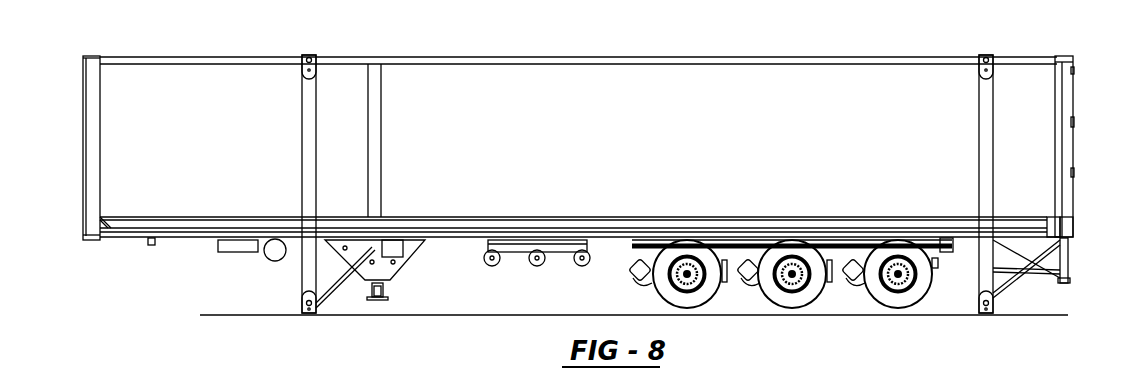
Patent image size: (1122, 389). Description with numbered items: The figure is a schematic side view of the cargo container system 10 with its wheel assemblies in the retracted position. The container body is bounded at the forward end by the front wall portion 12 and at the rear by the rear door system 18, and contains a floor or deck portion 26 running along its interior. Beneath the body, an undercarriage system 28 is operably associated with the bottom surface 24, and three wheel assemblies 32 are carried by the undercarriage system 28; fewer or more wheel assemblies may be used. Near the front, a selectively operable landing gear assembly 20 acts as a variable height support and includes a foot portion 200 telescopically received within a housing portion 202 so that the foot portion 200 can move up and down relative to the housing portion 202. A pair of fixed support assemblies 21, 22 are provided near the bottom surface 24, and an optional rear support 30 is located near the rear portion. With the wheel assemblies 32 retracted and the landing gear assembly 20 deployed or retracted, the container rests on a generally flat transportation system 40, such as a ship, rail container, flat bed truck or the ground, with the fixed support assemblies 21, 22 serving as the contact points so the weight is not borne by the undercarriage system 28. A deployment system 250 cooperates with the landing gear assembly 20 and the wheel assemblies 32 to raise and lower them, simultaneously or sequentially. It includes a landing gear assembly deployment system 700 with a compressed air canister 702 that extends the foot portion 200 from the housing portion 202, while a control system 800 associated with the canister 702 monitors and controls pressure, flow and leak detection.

The cargo container system 10 is at (766, 51).
The front wall portion 12 is at (78, 105).
The rear door system 18 is at (1077, 131).
The landing gear assembly 20 is at (398, 304).
The fixed support assembly 21 is at (279, 277).
The fixed support assembly 22 is at (1010, 305).
The bottom surface 24 is at (207, 253).
The floor or deck portion 26 is at (669, 197).
The undercarriage system 28 is at (626, 258).
The rear support 30 is at (1077, 259).
The wheel assembly 32 is at (691, 318).
The transportation system 40 is at (225, 318).
The foot portion 200 is at (377, 304).
The housing portion 202 is at (356, 279).
The deployment system 250 is at (518, 277).
The landing gear assembly deployment system 700 is at (285, 241).
The compressed air canister 702 is at (276, 238).
The control system 800 is at (237, 236).